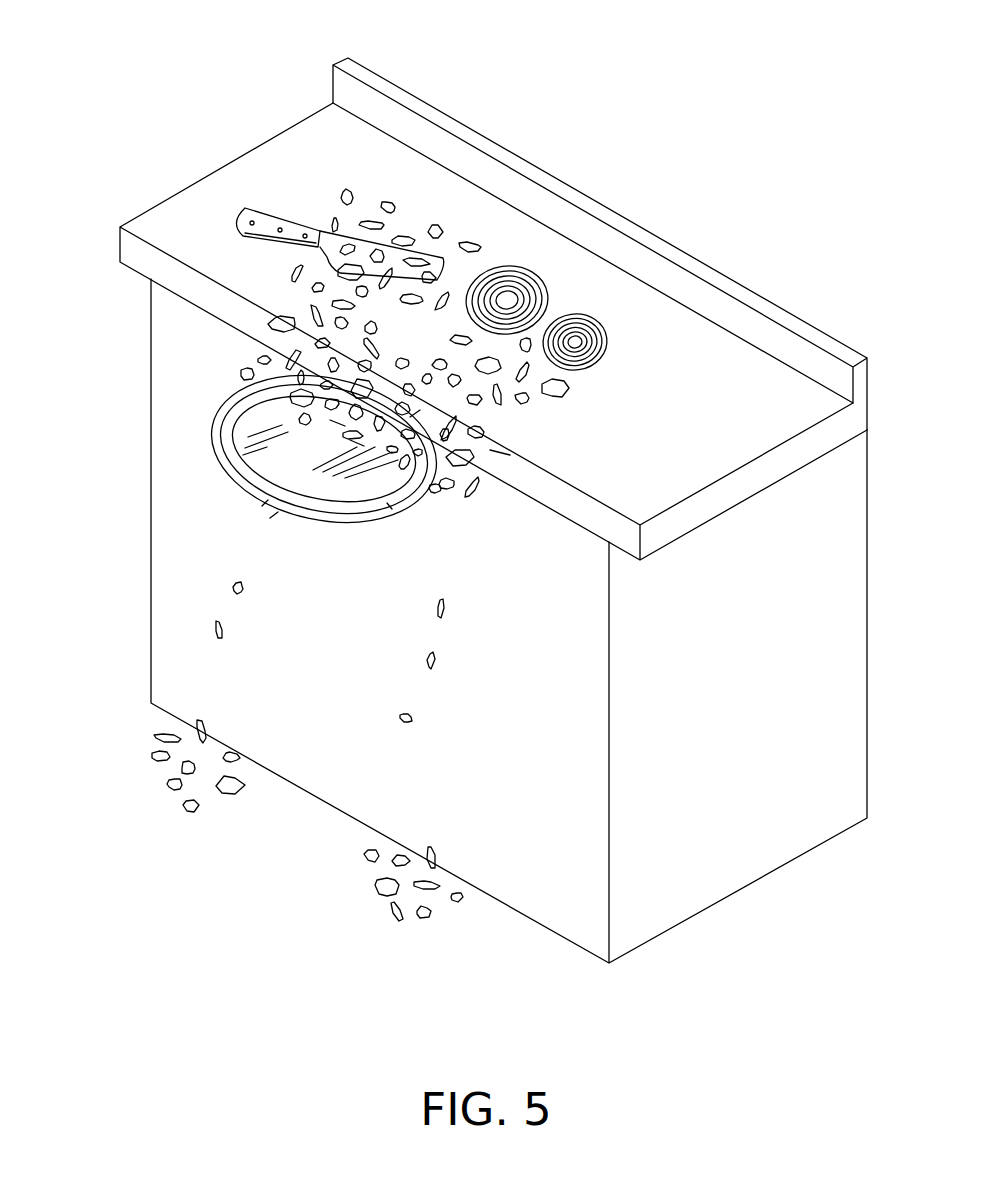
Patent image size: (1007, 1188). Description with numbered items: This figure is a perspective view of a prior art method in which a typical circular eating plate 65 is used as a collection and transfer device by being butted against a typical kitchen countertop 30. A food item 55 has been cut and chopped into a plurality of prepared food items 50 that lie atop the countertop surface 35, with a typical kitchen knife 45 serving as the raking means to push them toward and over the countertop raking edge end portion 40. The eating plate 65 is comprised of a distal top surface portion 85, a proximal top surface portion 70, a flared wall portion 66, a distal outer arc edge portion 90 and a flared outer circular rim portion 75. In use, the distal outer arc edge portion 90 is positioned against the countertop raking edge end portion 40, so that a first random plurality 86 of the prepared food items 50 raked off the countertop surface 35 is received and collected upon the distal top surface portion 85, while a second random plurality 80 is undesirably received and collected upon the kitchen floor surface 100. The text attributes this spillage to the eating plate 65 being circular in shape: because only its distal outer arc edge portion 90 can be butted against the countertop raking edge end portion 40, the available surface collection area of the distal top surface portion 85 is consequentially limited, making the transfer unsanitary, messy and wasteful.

The kitchen countertop 30 is at (775, 450).
The countertop surface 35 is at (700, 374).
The countertop raking edge end portion 40 is at (502, 462).
The kitchen knife 45 is at (243, 210).
The prepared food items 50 is at (312, 305).
The food item 55 is at (513, 267).
The circular eating plate 65 is at (283, 547).
The flared wall portion 66 is at (283, 503).
The proximal top surface portion 70 is at (283, 475).
The flared outer circular rim portion 75 is at (326, 518).
The second random plurality 80 is at (375, 892).
The distal top surface portion 85 is at (353, 425).
The first random plurality 86 is at (357, 443).
The distal outer arc edge portion 90 is at (322, 376).
The kitchen floor surface 100 is at (330, 872).